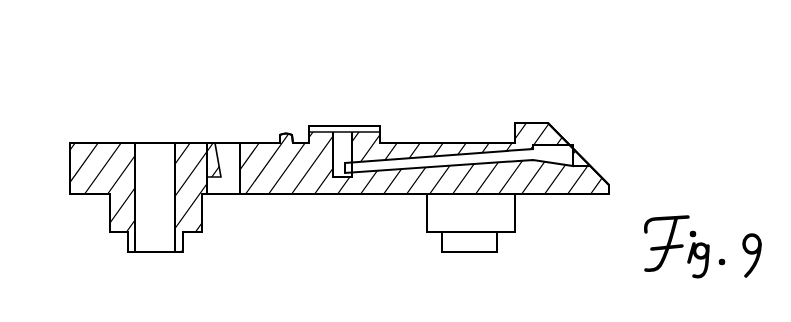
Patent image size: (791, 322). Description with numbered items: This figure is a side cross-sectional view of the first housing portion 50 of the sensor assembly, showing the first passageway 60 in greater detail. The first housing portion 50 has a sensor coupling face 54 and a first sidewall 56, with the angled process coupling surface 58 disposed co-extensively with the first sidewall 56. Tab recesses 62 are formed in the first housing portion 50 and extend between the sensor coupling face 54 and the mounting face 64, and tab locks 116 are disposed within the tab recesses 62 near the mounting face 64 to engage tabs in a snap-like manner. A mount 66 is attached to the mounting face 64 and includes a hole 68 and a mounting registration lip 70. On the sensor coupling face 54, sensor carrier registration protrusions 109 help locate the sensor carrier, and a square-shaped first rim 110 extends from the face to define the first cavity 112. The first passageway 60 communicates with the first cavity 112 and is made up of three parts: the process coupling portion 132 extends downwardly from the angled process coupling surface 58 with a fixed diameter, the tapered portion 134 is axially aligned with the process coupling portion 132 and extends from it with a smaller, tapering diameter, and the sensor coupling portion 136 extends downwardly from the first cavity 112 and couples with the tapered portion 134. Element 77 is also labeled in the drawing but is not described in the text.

The first housing portion 50 is at (550, 89).
The sensor coupling face 54 is at (93, 143).
The first sidewall 56 is at (70, 165).
The angled process coupling surface 58 is at (560, 137).
The first passageway 60 is at (390, 156).
The tab recesses 62 is at (226, 194).
The mounting face 64 is at (100, 193).
The mount 66 is at (108, 205).
The hole 68 is at (140, 232).
The mounting registration lip 70 is at (182, 243).
The pin 77 is at (442, 240).
The sensor carrier registration protrusions 109 is at (285, 135).
The first rim 110 is at (313, 126).
The first cavity 112 is at (330, 126).
The tab locks 116 is at (222, 143).
The process coupling portion 132 is at (574, 157).
The tapered portion 134 is at (470, 156).
The sensor coupling portion 136 is at (348, 133).